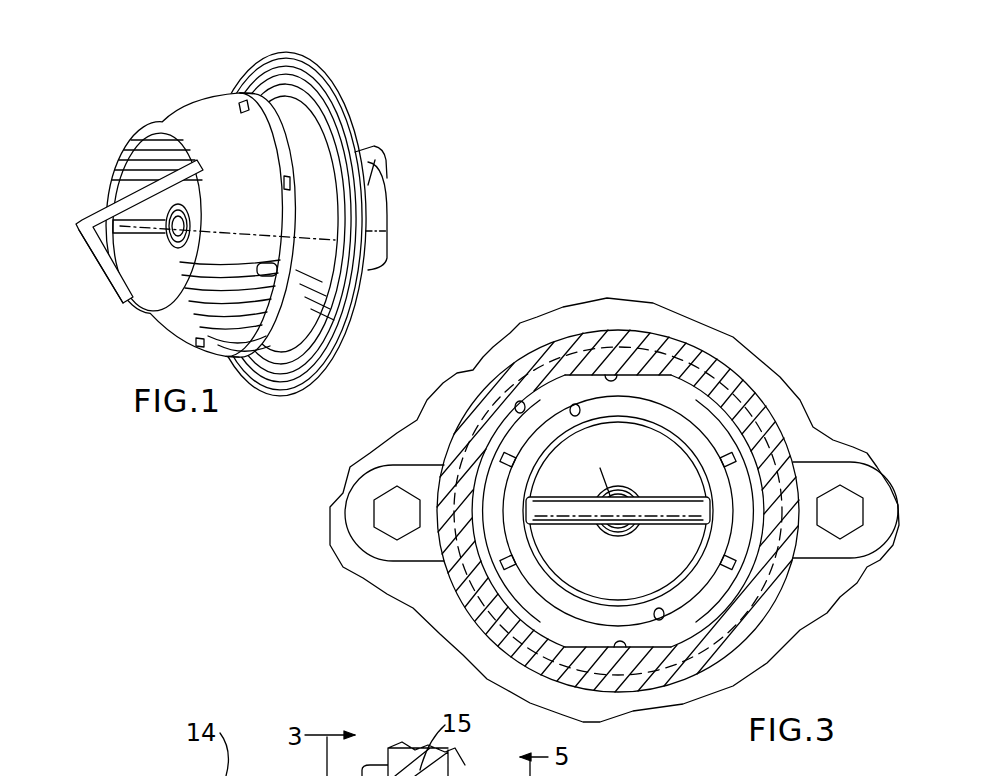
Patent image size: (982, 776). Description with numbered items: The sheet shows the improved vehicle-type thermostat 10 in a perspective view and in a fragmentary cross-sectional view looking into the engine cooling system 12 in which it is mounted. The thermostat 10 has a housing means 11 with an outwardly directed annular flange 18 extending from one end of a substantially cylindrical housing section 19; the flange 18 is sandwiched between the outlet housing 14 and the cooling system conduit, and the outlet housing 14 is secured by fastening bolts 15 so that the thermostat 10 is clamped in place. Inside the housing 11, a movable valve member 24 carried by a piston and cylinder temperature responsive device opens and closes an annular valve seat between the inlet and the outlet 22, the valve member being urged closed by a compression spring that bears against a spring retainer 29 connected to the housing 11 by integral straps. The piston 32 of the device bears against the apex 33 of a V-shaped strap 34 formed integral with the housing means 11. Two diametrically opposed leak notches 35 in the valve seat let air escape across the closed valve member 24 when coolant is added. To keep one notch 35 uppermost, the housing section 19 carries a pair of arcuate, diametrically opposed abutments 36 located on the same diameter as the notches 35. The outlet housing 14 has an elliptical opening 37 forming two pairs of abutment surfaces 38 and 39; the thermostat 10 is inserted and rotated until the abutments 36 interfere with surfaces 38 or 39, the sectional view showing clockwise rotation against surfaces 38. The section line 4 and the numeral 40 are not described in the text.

In FIG. 1, the vehicle-type thermostat 10 is at (392, 75).
In FIG. 3, the vehicle-type thermostat 10 is at (718, 414).
In FIG. 1, the housing means 11 is at (258, 90).
In FIG. 3, the engine cooling system 12 is at (775, 332).
In FIG. 3, the outlet housing 14 is at (473, 613).
In FIG. 3, the fastening bolts 15 is at (383, 507).
In FIG. 1, the annular flange 18 is at (265, 54).
In FIG. 3, the annular flange 18 is at (640, 340).
In FIG. 1, the cylindrical housing section 19 is at (292, 113).
In FIG. 3, the cylindrical housing section 19 is at (680, 388).
In FIG. 1, the outlet 22 is at (150, 272).
In FIG. 3, the outlet 22 is at (567, 465).
In FIG. 1, the valve member 24 is at (173, 283).
In FIG. 3, the valve member 24 is at (670, 565).
In FIG. 1, the spring retainer 29 is at (378, 166).
In FIG. 1, the piston 32 is at (138, 236).
In FIG. 1, the apex 33 is at (80, 222).
In FIG. 3, the apex 33 is at (627, 520).
In FIG. 1, the V-shaped strap 34 is at (140, 200).
In FIG. 3, the V-shaped strap 34 is at (673, 505).
In FIG. 3, the leak notches 35 is at (562, 408).
In FIG. 1, the abutments 36 is at (320, 277).
In FIG. 3, the abutments 36 is at (567, 375).
In FIG. 3, the elliptical opening 37 is at (516, 405).
In FIG. 3, the abutment surfaces 38 is at (623, 649).
In FIG. 3, the abutment surfaces 39 is at (617, 374).
In FIG. 3, the chamber 40 is at (472, 448).
In FIG. 3, the section line 4- 4 is at (543, 330).